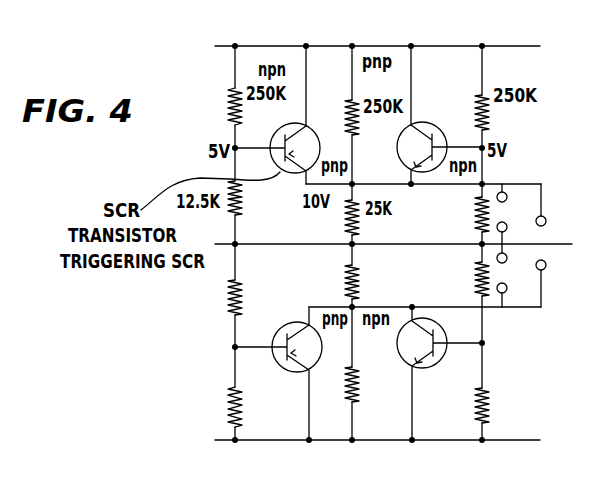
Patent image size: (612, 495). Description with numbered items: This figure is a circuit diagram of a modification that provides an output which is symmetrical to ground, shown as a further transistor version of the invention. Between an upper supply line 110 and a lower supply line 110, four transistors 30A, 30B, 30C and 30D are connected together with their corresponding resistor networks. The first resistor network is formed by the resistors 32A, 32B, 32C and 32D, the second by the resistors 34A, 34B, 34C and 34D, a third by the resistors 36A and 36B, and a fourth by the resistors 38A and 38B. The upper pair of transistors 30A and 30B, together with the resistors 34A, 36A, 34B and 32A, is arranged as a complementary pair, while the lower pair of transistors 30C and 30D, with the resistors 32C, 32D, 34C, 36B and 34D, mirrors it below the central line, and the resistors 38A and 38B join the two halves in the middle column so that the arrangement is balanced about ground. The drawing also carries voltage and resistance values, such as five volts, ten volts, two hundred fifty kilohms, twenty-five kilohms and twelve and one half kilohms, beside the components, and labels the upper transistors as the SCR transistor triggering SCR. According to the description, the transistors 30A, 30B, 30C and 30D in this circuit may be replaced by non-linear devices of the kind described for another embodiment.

The supply rail / line 110 is at (380, 243).
The transistor 30A is at (278, 160).
The transistor 30B is at (403, 160).
The transistor 30C is at (284, 370).
The transistor 30D is at (436, 364).
The resistor network 32A is at (242, 203).
The resistor network 32B is at (476, 216).
The resistor network 32C is at (240, 285).
The resistor network 32D is at (474, 284).
The resistor network 34A is at (230, 100).
The resistor network 34B is at (476, 100).
The resistor network 34C is at (244, 410).
The resistor network 34D is at (491, 404).
The resistor network 36A is at (347, 118).
The resistor network 36B is at (357, 402).
The resistor network 38A is at (359, 215).
The resistor network 38B is at (360, 286).